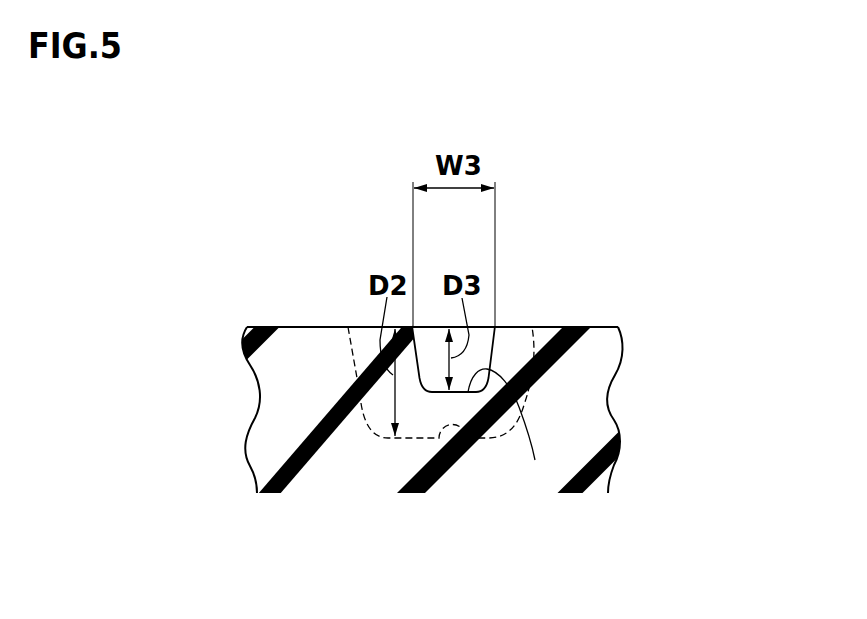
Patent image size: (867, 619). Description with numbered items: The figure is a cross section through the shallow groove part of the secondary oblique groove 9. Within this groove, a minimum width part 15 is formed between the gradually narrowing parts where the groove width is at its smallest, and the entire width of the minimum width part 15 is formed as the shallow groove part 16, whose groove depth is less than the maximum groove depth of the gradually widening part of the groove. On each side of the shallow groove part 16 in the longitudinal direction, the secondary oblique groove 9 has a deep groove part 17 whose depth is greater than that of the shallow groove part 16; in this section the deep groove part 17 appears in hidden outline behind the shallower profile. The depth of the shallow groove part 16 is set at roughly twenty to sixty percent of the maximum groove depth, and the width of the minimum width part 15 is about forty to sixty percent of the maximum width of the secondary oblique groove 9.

The secondary oblique groove 9 is at (425, 362).
The minimum width part 15 is at (432, 322).
The shallow groove part 16 is at (535, 460).
The deep groove part 17 is at (478, 438).